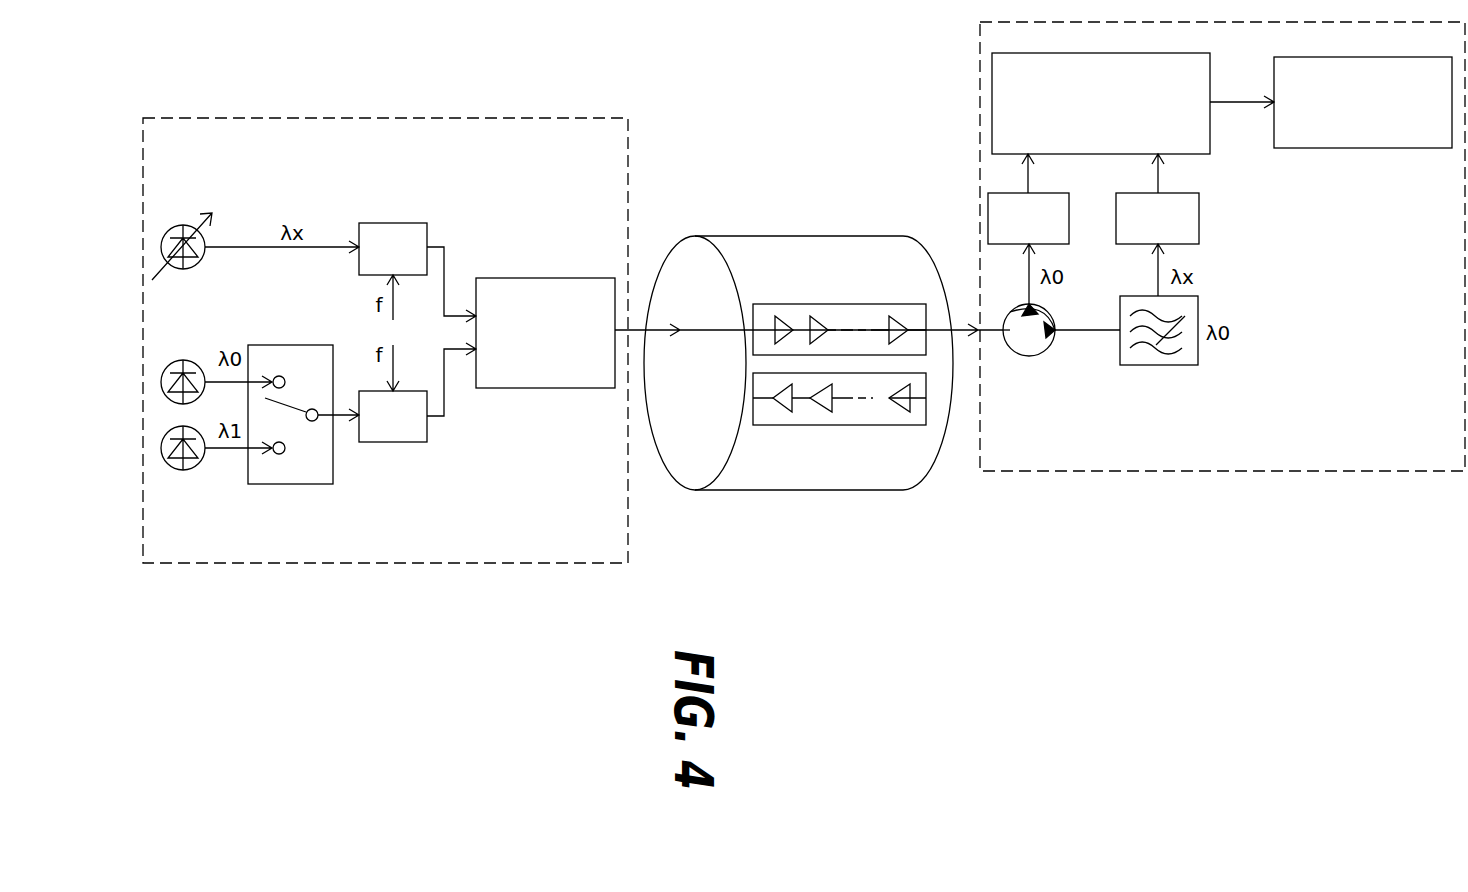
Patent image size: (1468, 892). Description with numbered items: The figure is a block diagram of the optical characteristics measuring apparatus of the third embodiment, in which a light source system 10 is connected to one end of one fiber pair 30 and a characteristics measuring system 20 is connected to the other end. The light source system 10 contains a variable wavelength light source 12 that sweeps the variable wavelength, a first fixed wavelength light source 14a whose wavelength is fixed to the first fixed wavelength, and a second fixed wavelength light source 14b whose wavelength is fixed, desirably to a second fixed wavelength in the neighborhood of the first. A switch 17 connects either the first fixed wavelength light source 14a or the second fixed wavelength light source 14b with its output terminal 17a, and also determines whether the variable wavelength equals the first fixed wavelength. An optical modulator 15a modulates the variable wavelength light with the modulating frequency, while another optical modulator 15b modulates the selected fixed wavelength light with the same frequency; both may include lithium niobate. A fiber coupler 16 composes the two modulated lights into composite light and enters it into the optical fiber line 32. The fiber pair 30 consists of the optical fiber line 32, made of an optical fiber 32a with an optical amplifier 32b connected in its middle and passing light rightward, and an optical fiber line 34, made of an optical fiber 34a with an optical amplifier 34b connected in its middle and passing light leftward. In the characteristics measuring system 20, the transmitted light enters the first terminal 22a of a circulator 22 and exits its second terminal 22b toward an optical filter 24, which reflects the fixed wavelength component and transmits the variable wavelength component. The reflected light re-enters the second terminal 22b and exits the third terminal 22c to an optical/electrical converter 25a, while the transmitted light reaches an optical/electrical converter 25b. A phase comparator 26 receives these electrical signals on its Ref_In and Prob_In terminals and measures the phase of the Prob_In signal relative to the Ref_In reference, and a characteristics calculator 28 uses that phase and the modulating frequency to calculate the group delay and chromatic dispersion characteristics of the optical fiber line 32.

The light source system 10 is at (398, 563).
The variable wavelength light source 12 is at (205, 240).
The first fixed wavelength light source 14a is at (188, 361).
The second fixed wavelength light source 14b is at (187, 470).
The optical modulator 15a is at (400, 223).
The optical modulator 15b is at (393, 442).
The fiber coupler 16 is at (553, 278).
The switch 17 is at (290, 416).
The output terminal 17a is at (310, 424).
The characteristics measuring system 20 is at (1200, 471).
The circulator 22 is at (1045, 343).
The first terminal 22a is at (1008, 345).
The second terminal 22b is at (1052, 345).
The third terminal 22c is at (1018, 308).
The optical filter 24 is at (1152, 365).
The optical/electrical converter 25a is at (1069, 220).
The optical/electrical converter 25b is at (1199, 220).
The phase comparator 26 is at (1210, 122).
The characteristics calculator 28 is at (1332, 148).
The fiber pair 30 is at (797, 236).
The optical fiber line 32 is at (839, 303).
The optical fiber 32a is at (808, 330).
The optical amplifier 32b is at (790, 330).
The optical fiber line 34 is at (832, 429).
The optical fiber 34a is at (800, 398).
The optical amplifier 34b is at (782, 398).